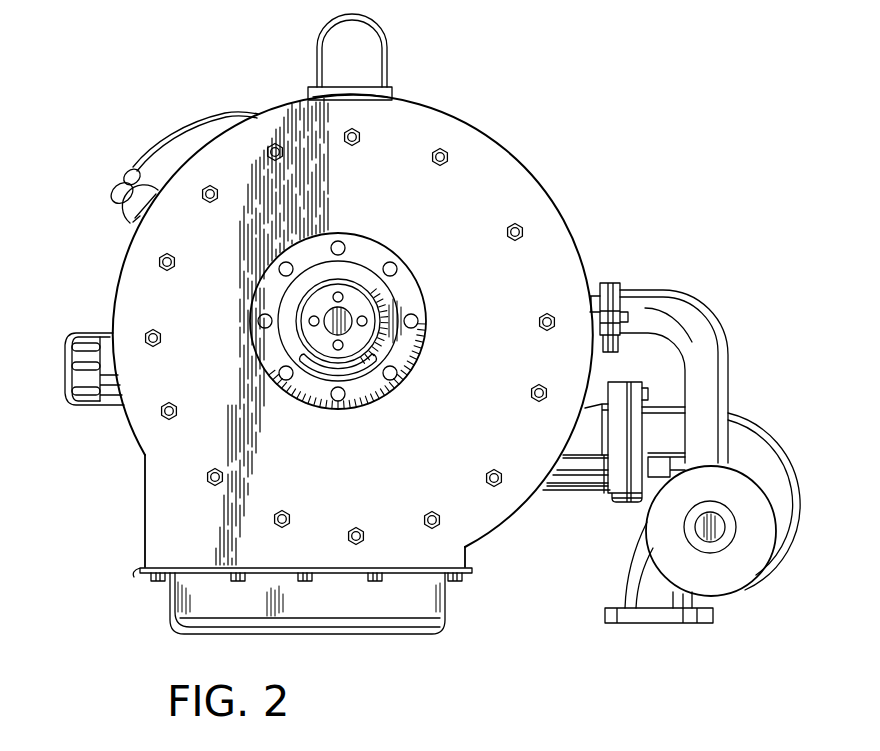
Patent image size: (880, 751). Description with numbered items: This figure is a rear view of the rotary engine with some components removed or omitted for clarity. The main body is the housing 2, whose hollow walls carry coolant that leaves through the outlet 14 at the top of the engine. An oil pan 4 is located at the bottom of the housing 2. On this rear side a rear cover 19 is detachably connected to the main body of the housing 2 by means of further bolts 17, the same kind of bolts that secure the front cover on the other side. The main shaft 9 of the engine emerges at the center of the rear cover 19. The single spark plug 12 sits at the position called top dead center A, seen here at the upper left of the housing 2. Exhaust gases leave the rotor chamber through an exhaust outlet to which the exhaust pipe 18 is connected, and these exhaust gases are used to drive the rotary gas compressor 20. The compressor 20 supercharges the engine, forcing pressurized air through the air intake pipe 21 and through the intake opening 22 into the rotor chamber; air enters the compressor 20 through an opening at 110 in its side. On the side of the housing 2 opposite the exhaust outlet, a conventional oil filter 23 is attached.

The housing 2 is at (450, 112).
The oil pan 4 is at (428, 602).
The main shaft 9 is at (352, 323).
The spark plug 12 is at (134, 207).
The outlet 14 is at (385, 76).
The bolts 17 is at (448, 154).
The exhaust pipe 18 is at (570, 468).
The rear cover 19 is at (500, 188).
The rotary gas compressor 20 is at (731, 565).
The air intake pipe 21 is at (678, 330).
The intake opening 22 is at (612, 283).
The oil filter 23 is at (88, 406).
The opening 110 is at (696, 528).
The top dead center A is at (133, 222).